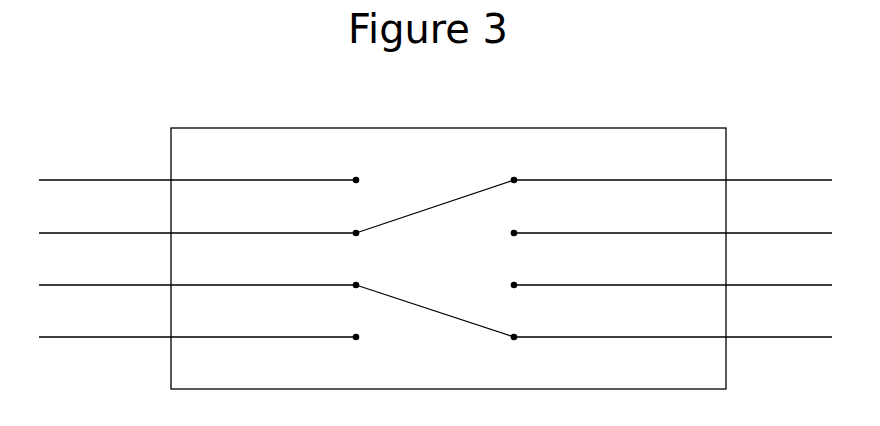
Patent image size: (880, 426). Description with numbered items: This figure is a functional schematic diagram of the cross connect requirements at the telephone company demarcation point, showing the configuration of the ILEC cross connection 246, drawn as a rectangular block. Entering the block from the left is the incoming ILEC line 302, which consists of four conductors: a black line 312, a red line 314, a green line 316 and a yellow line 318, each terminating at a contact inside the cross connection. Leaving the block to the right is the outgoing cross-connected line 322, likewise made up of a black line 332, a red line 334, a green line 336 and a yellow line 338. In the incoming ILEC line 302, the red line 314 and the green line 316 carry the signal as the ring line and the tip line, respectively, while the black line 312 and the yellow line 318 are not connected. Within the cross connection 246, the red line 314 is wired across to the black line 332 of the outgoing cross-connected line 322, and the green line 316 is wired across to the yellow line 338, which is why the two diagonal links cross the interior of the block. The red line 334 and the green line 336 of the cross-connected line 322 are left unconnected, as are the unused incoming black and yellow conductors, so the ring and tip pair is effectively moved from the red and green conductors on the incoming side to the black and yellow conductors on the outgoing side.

The ILEC cross connection 246 is at (550, 128).
The incoming ILEC line 302 is at (126, 144).
The outgoing cross-connected line 322 is at (766, 145).
The black line 312 is at (199, 171).
The red line 314 is at (276, 208).
The green line 316 is at (276, 299).
The yellow line 318 is at (199, 327).
The black line 332 is at (671, 170).
The red line 334 is at (671, 223).
The green line 336 is at (671, 275).
The yellow line 338 is at (671, 327).